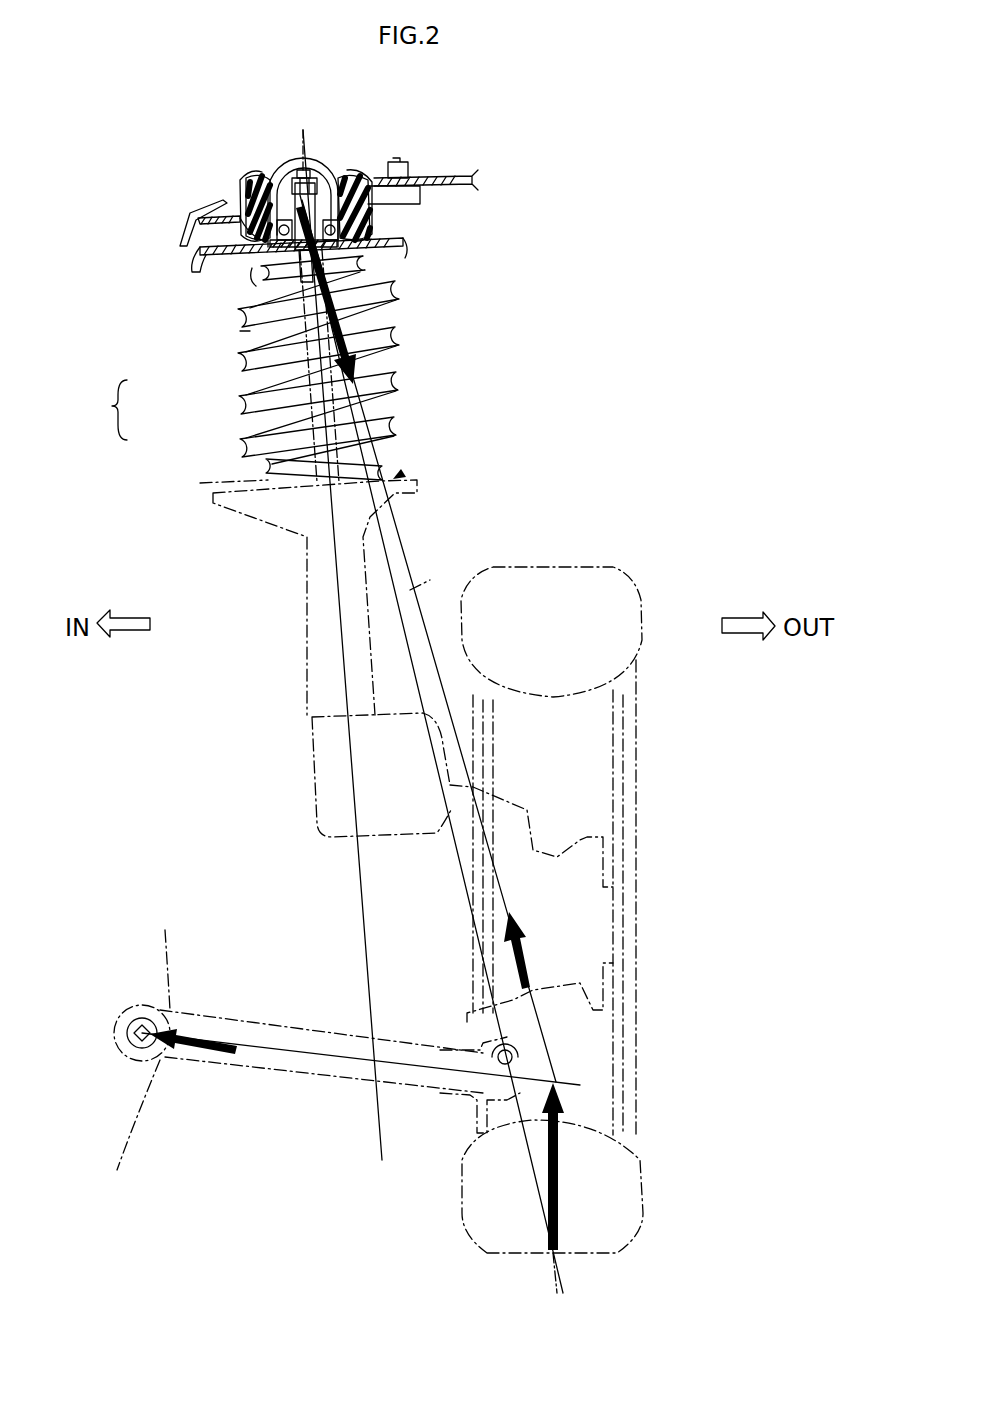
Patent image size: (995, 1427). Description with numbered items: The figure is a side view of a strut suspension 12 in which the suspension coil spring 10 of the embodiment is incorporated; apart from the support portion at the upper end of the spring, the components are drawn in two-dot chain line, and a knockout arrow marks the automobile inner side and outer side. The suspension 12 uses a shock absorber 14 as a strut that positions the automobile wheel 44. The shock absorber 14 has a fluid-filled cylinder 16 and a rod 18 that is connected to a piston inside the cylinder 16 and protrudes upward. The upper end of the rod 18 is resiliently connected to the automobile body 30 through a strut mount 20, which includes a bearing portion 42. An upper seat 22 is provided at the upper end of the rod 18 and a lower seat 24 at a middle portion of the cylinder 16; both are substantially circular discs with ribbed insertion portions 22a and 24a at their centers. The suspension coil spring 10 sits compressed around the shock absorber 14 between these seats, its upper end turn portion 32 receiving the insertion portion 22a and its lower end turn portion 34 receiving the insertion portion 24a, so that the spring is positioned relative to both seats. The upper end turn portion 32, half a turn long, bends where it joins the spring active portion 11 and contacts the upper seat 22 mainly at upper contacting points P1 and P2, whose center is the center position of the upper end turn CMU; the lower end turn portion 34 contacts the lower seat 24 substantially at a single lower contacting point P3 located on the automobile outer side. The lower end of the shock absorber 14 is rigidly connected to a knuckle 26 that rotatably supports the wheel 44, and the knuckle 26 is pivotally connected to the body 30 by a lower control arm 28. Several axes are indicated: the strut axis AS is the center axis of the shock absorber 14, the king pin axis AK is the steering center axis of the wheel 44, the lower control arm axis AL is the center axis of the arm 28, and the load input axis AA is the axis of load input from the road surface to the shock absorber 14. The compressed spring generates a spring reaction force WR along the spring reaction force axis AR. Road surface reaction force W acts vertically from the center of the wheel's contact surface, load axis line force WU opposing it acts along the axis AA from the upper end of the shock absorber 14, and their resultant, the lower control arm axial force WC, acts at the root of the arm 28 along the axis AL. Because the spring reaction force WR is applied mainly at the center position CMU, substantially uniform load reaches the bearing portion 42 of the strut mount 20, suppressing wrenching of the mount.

The suspension coil spring 10 is at (438, 316).
The spring active portion 11 is at (420, 337).
The strut suspension 12 is at (532, 476).
The shock absorber 14 is at (214, 366).
The cylinder 16 is at (320, 402).
The rod 18 is at (240, 333).
The strut mount 20 is at (348, 148).
The upper seat 22 is at (200, 250).
The insertion portion 22a is at (245, 272).
The lower seat 24 is at (413, 483).
The insertion portion 24a is at (268, 466).
The knuckle 26 is at (318, 778).
The lower control arm 28 is at (262, 1022).
The automobile body 30 is at (470, 178).
The upper end turn portion 32 is at (372, 265).
The lower end turn portion 34 is at (400, 465).
The bearing portion 42 is at (285, 240).
The automobile wheel 44 is at (640, 598).
The center position of the upper end turn CMU is at (237, 224).
The upper contacting point P1 is at (177, 234).
The upper contacting point P2 is at (242, 233).
The lower contacting point P3 is at (405, 474).
The load axis line force WU is at (370, 302).
The spring reaction force WR is at (530, 965).
The road surface reaction force W is at (555, 1188).
The lower control arm axial force WC is at (205, 1052).
The strut axis AS is at (325, 608).
The king pin axis AK is at (438, 805).
The load input axis AA is at (519, 555).
The spring reaction force axis AR is at (412, 590).
The lower control arm axis AL is at (290, 1078).